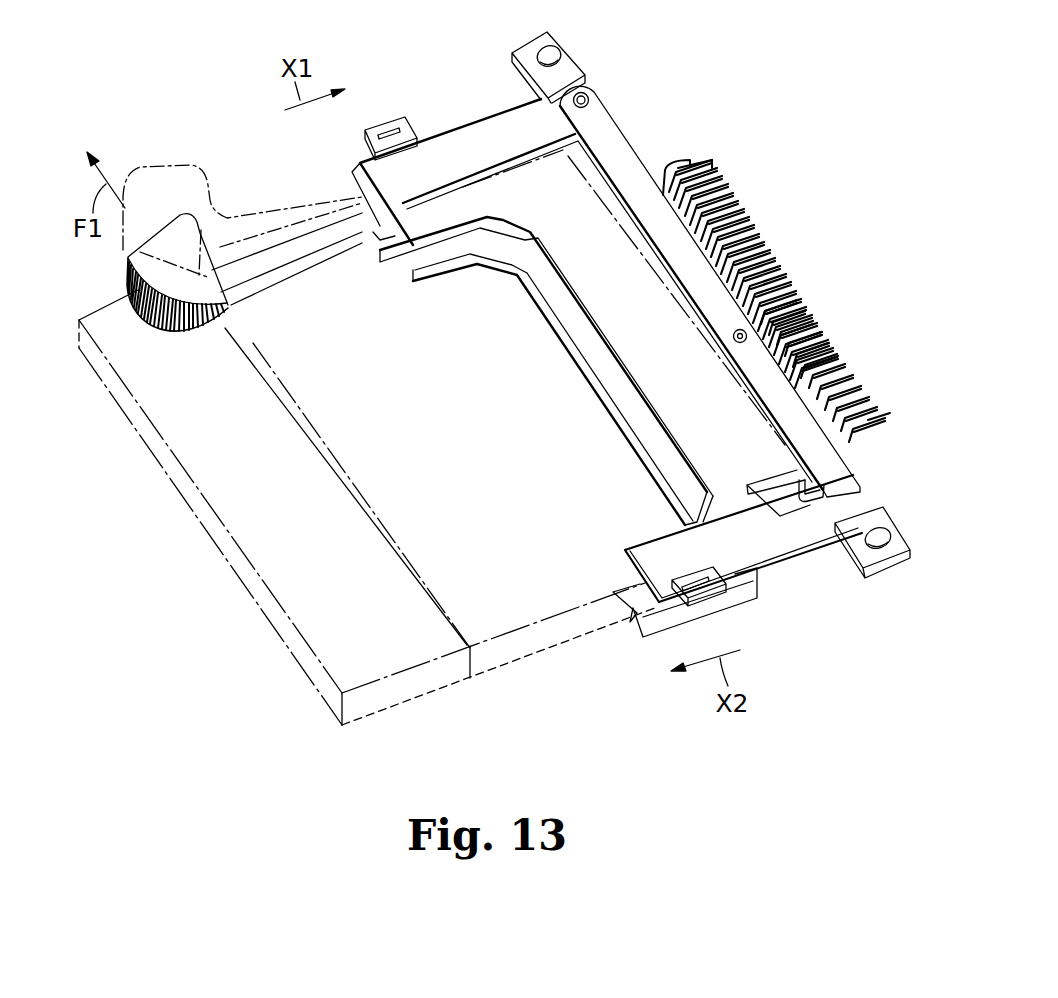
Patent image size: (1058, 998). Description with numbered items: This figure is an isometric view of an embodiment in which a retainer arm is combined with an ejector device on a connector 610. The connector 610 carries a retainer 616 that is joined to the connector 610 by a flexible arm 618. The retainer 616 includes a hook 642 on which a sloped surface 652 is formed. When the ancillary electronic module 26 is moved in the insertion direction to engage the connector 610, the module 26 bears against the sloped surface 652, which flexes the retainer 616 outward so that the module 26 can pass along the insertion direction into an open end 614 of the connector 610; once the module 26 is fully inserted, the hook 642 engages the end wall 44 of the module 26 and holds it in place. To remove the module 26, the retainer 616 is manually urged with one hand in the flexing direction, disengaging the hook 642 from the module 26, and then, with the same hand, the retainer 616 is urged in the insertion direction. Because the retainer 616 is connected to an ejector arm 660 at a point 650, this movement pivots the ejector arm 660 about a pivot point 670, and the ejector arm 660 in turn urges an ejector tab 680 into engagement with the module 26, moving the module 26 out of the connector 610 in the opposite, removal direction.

The ancillary electronic module 26 is at (393, 580).
The end wall 44 is at (323, 478).
The connector 610 is at (664, 90).
The open end 614 is at (570, 363).
The retainer 616 is at (172, 212).
The flexible arm 618 is at (240, 243).
The hook 642 is at (228, 315).
The point 650 is at (588, 95).
The sloped surface 652 is at (177, 334).
The ejector arm 660 is at (623, 150).
The pivot point 670 is at (731, 342).
The ejector tab 680 is at (805, 500).